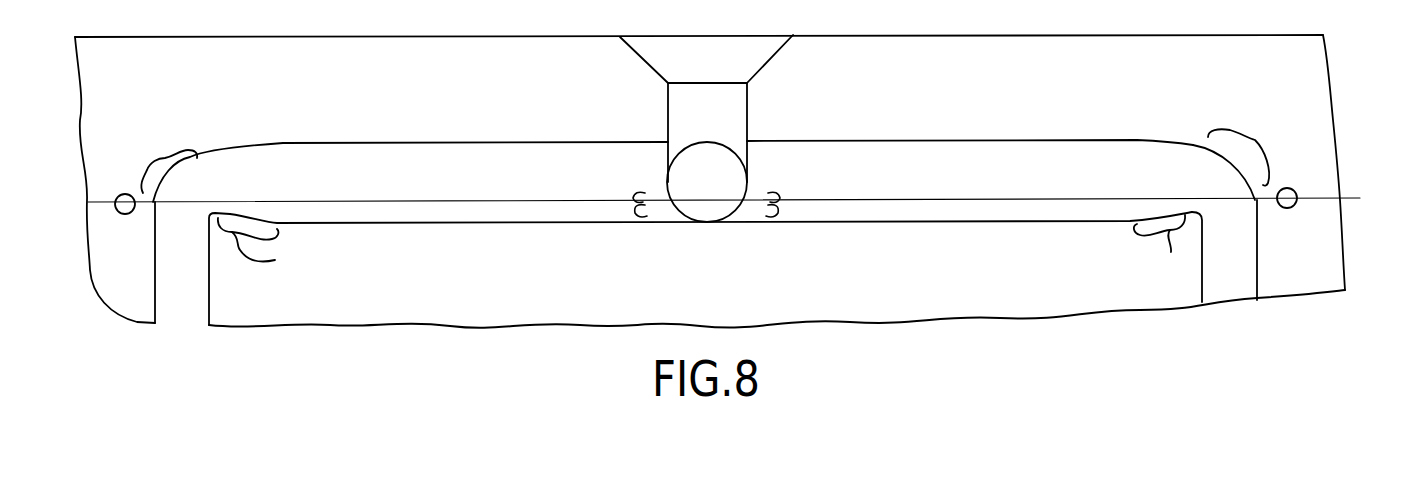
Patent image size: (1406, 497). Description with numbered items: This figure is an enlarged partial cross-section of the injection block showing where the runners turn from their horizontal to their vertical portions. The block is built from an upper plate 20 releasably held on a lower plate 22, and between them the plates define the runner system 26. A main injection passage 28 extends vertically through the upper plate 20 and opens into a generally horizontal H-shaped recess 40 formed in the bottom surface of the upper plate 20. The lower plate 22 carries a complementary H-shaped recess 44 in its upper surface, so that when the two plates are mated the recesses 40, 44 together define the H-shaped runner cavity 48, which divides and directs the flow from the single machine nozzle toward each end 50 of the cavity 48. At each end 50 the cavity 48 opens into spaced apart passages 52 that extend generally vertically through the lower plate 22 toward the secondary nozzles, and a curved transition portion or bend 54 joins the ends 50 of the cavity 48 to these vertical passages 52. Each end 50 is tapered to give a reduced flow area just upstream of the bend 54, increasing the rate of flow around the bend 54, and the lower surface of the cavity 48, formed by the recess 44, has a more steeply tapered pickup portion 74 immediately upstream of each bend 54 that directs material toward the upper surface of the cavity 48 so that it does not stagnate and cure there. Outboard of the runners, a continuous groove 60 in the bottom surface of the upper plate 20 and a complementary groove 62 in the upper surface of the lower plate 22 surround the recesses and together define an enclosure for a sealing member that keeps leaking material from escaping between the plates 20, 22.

The upper plate 20 is at (1280, 58).
The lower plate 22 is at (1338, 223).
The runner system 26 is at (1095, 118).
The main injection passage 28 is at (745, 111).
The H-shaped recess 40 is at (963, 141).
The H-shaped recess 44 is at (905, 211).
The runner cavity 48 is at (890, 152).
The end of the cavity 50 is at (218, 132).
The passage 52 is at (213, 284).
The bend 54 is at (160, 160).
The groove 60 is at (122, 195).
The groove 62 is at (126, 214).
The pickup portion 74 is at (275, 260).